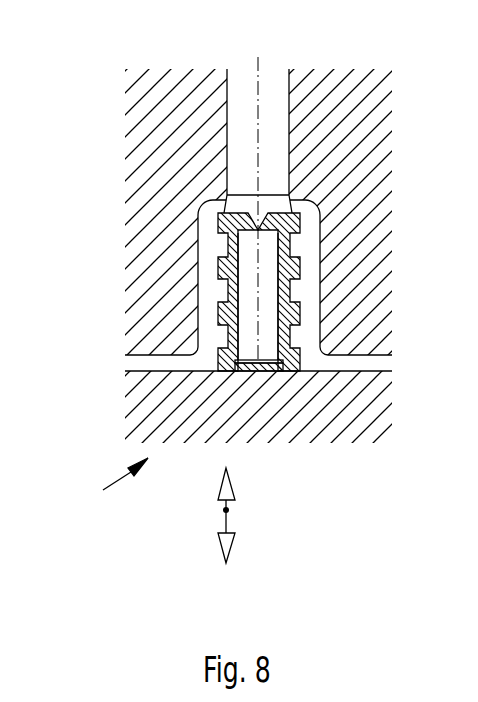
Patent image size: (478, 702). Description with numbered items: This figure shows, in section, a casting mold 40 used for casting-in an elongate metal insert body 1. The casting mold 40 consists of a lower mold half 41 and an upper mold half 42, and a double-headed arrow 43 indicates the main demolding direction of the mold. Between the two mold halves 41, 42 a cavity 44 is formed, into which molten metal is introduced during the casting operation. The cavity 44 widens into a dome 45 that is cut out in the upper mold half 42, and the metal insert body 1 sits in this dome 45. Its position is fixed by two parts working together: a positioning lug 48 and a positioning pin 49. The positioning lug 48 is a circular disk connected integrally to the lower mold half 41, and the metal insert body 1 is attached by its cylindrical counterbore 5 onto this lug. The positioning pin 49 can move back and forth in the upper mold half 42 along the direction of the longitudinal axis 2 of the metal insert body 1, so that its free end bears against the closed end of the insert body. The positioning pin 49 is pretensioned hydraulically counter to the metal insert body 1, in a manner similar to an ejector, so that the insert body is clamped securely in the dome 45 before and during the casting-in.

The metal insert body 1 is at (294, 268).
The longitudinal axis 2 is at (258, 256).
The cylindrical counterbore 5 is at (235, 367).
The casting mold 40 is at (111, 489).
The lower mold half 41 is at (153, 407).
The upper mold half 42 is at (171, 139).
The double-headed arrow 43 is at (226, 510).
The cavity 44 is at (377, 362).
The dome 45 is at (209, 292).
The positioning lug 48 is at (273, 367).
The positioning pin 49 is at (268, 85).